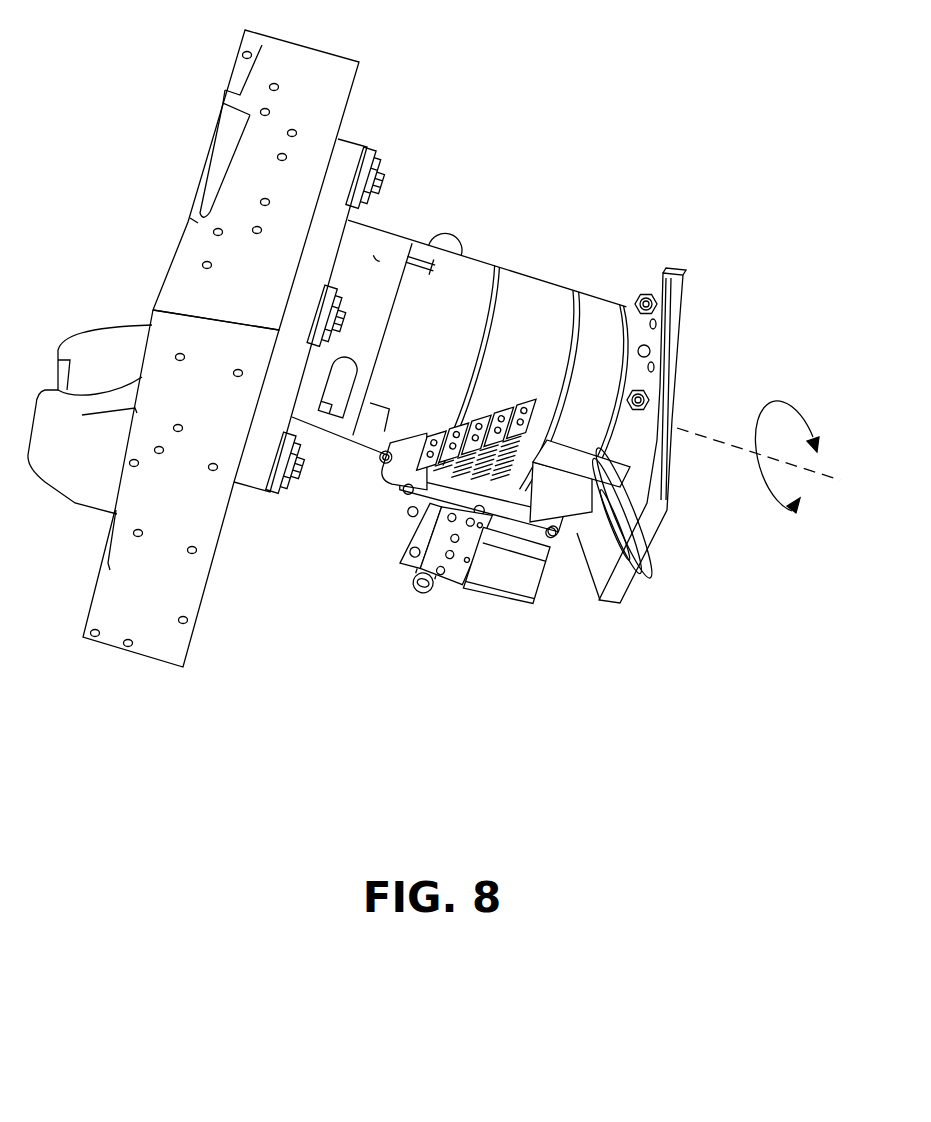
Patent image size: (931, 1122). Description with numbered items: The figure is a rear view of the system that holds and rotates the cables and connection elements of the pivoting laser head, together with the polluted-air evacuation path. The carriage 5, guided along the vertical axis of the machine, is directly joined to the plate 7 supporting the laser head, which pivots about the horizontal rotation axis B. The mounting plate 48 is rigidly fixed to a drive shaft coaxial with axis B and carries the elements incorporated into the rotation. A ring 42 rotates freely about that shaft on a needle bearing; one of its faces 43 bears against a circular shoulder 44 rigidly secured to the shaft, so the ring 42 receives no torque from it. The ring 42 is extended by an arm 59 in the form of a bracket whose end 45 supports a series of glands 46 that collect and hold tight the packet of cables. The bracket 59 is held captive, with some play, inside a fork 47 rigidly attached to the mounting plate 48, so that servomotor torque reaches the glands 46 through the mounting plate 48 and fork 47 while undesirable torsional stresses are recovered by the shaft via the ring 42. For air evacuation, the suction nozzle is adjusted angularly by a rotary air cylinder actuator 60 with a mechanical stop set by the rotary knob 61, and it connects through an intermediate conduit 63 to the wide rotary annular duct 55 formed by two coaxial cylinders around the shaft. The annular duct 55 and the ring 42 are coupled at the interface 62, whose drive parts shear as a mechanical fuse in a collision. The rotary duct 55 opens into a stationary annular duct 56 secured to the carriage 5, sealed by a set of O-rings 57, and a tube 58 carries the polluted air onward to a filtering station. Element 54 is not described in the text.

The carriage 5 is at (313, 73).
The plate 7 is at (323, 231).
The ring 42 is at (627, 302).
The face of the ring 43 is at (641, 293).
The circular shoulder 44 is at (640, 386).
The end of the arm 45 is at (405, 460).
The glands 46 is at (503, 420).
The fork 47 is at (605, 470).
The mounting plate 48 is at (677, 287).
The coupling disc 54 is at (613, 527).
The annular duct 55 is at (570, 300).
The stationary annular duct 56 is at (420, 291).
The O-rings 57 is at (496, 266).
The tube 58 is at (448, 238).
The arm 59 is at (567, 507).
The rotary air cylinder actuator 60 is at (450, 565).
The rotary knob 61 is at (422, 592).
The interface 62 is at (595, 320).
The intermediate conduit 63 is at (503, 573).
The rotation axis B is at (758, 457).